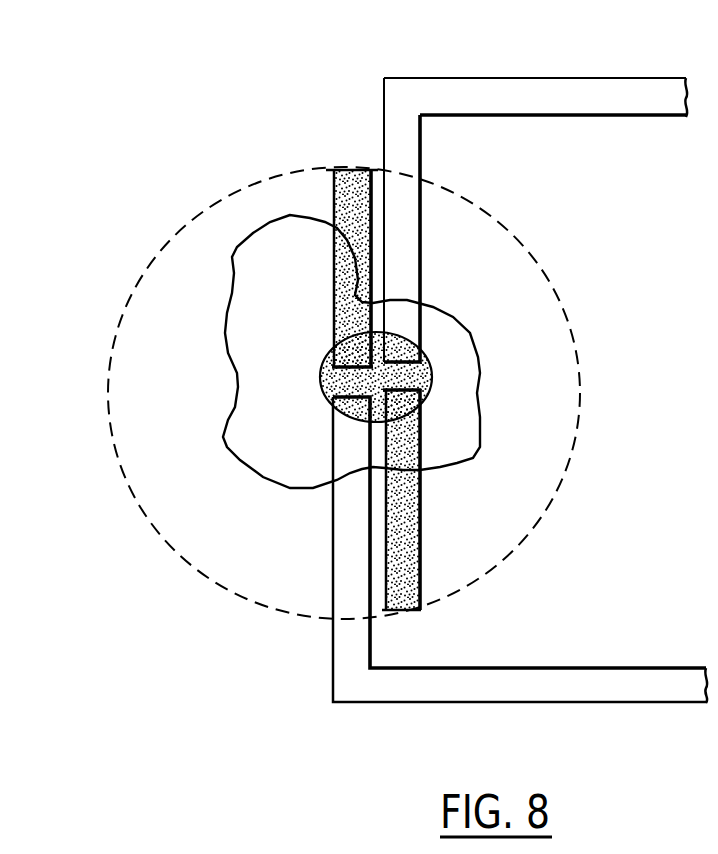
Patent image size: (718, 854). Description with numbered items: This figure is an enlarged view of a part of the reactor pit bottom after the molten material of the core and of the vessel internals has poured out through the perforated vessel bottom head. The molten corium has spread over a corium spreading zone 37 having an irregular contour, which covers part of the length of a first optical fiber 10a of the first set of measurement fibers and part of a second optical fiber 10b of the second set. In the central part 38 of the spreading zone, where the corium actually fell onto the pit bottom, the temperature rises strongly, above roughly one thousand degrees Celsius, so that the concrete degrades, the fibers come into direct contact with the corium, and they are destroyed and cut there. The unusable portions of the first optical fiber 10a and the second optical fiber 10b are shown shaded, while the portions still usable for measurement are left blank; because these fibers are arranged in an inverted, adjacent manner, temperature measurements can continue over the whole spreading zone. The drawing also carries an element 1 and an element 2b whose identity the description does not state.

The device housing 1 is at (393, 145).
The stippled bar element 2b is at (333, 192).
The upper bracket arm 10a is at (627, 80).
The lower bracket arm 10b is at (572, 692).
The junction region 37 is at (483, 363).
The lower bar element 38 is at (430, 383).